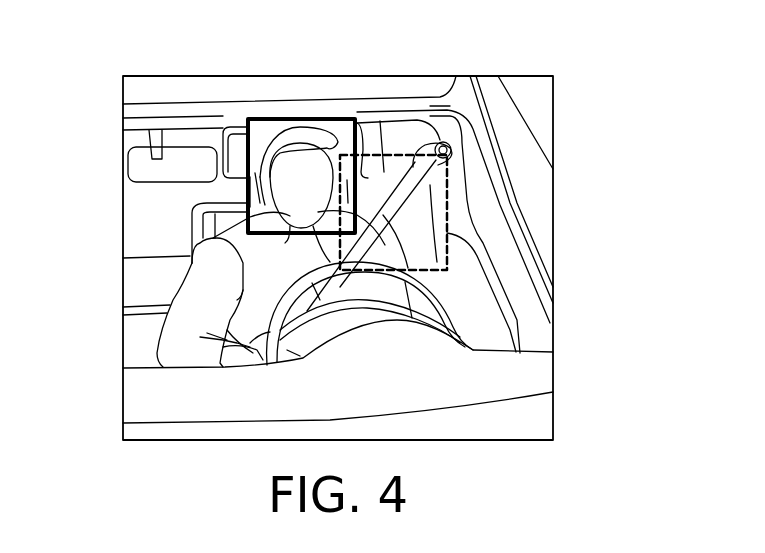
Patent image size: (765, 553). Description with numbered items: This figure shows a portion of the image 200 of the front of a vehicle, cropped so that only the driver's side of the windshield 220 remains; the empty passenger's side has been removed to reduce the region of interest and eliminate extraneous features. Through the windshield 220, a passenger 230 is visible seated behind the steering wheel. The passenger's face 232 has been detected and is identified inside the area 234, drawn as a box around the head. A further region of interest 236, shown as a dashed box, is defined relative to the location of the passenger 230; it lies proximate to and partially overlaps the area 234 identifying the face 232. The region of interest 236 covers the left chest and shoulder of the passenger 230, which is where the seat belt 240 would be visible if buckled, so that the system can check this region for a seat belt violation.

The image 200 is at (502, 47).
The windshield 220 is at (496, 408).
The passenger 230 is at (263, 278).
The face 232 is at (306, 170).
The area 234 is at (283, 116).
The region of interest 236 is at (447, 194).
The seat belt 240 is at (398, 214).